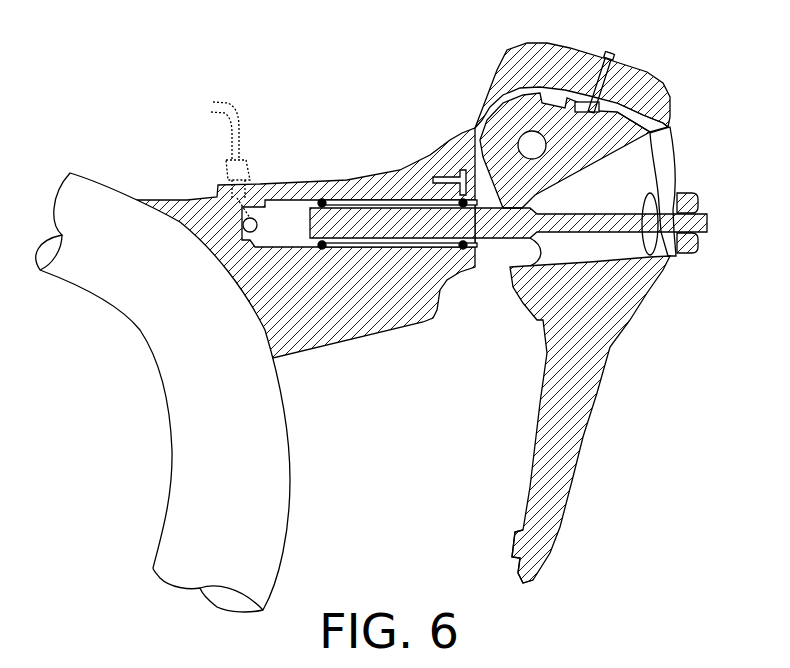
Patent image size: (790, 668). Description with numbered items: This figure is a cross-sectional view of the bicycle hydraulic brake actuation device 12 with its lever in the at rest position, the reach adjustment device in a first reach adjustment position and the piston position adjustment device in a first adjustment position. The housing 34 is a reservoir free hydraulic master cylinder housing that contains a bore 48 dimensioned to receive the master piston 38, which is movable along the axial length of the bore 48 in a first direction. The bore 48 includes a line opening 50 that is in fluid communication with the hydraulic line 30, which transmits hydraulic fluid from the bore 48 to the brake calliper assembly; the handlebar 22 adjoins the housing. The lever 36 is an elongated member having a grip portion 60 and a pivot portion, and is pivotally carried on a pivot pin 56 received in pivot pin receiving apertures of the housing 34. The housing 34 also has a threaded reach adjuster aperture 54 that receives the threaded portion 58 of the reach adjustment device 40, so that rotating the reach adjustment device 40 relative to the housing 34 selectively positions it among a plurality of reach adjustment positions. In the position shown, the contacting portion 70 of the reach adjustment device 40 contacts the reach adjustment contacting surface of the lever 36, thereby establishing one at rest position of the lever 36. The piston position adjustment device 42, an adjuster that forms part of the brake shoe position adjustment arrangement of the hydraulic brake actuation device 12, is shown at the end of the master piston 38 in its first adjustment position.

The hydraulic brake actuation device 12 is at (346, 72).
The tube 22 is at (187, 408).
The hydraulic line 30 is at (243, 130).
The housing 34 is at (333, 318).
The lever 36 is at (590, 383).
The master piston 38 is at (503, 232).
The reach adjustment device 40 is at (607, 55).
The piston position adjustment device 42 is at (687, 180).
The bore 48 is at (280, 208).
The line opening 50 is at (242, 245).
The reach adjuster aperture 54 is at (617, 72).
The pivot pin 56 is at (523, 137).
The threaded portion 58 is at (612, 52).
The grip portion 60 is at (543, 485).
The contacting portion 70 is at (673, 127).